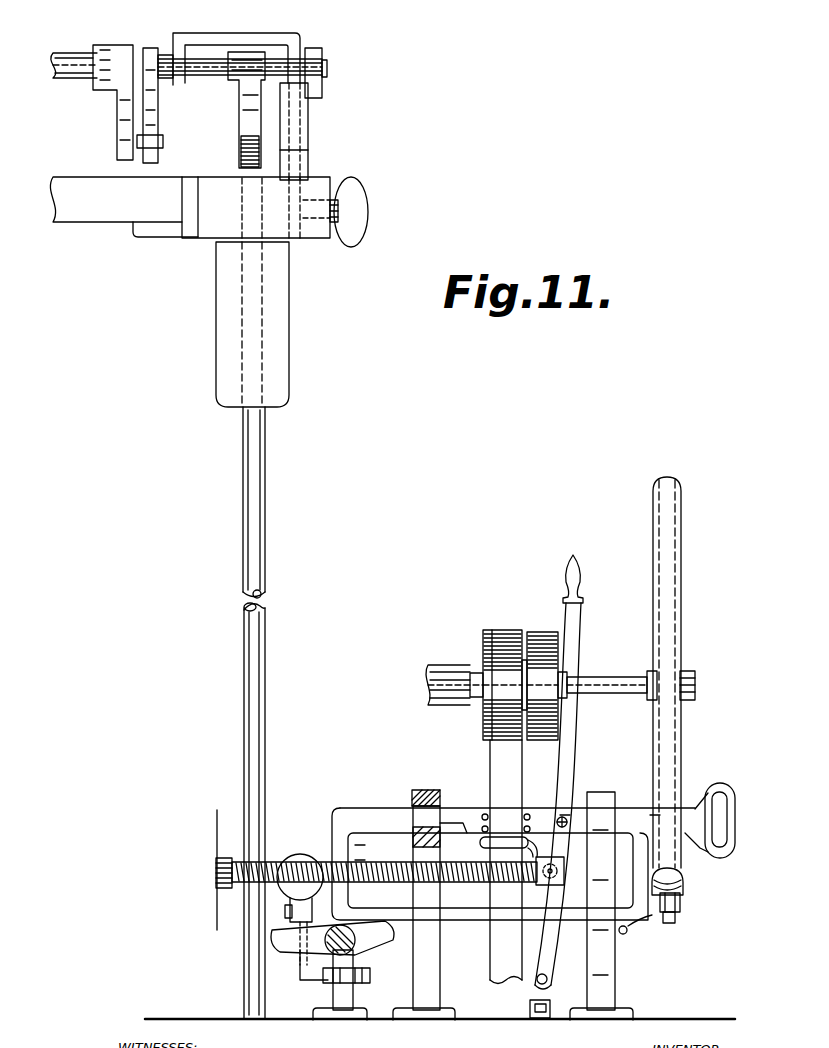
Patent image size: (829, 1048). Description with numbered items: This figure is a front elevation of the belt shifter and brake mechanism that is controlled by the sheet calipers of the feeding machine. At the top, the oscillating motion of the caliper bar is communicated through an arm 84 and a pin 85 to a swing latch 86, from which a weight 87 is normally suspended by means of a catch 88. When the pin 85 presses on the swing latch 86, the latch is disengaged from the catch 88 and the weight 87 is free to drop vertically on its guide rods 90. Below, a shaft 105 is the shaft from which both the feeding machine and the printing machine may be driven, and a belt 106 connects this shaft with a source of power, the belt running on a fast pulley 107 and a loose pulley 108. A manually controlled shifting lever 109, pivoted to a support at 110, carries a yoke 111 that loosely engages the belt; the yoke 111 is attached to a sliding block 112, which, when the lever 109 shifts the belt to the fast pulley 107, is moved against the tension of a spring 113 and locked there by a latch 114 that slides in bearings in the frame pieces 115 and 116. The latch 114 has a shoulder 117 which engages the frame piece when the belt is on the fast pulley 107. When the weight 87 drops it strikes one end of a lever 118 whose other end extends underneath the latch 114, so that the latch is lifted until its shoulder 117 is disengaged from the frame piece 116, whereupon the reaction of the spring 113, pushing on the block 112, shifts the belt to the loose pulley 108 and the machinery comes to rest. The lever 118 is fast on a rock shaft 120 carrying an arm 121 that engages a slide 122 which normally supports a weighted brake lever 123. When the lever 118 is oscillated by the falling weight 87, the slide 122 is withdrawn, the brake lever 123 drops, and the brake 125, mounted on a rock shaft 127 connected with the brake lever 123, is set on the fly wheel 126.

The arm 84 is at (117, 116).
The pin 85 is at (163, 142).
The swing latch 86 is at (158, 111).
The weight 87 is at (252, 324).
The catch 88 is at (241, 158).
The guide rods 90 is at (262, 636).
The shaft 105 is at (477, 667).
The belt 106 is at (500, 748).
The fast pulley 107 is at (492, 632).
The loose pulley 108 is at (555, 626).
The shifting lever 109 is at (574, 620).
The pivot 110 is at (536, 985).
The yoke 111 is at (498, 843).
The sliding block 112 is at (565, 874).
The spring 113 is at (456, 878).
The latch 114 is at (383, 800).
The frame piece 115 is at (601, 793).
The frame piece 116 is at (442, 787).
The shoulder 117 is at (413, 838).
The lever 118 is at (332, 946).
The rock shaft 120 is at (352, 952).
The arm 121 is at (369, 976).
The slide 122 is at (321, 983).
The brake lever 123 is at (287, 913).
The brake 125 is at (684, 887).
The fly wheel 126 is at (673, 753).
The rock shaft 127 is at (628, 936).